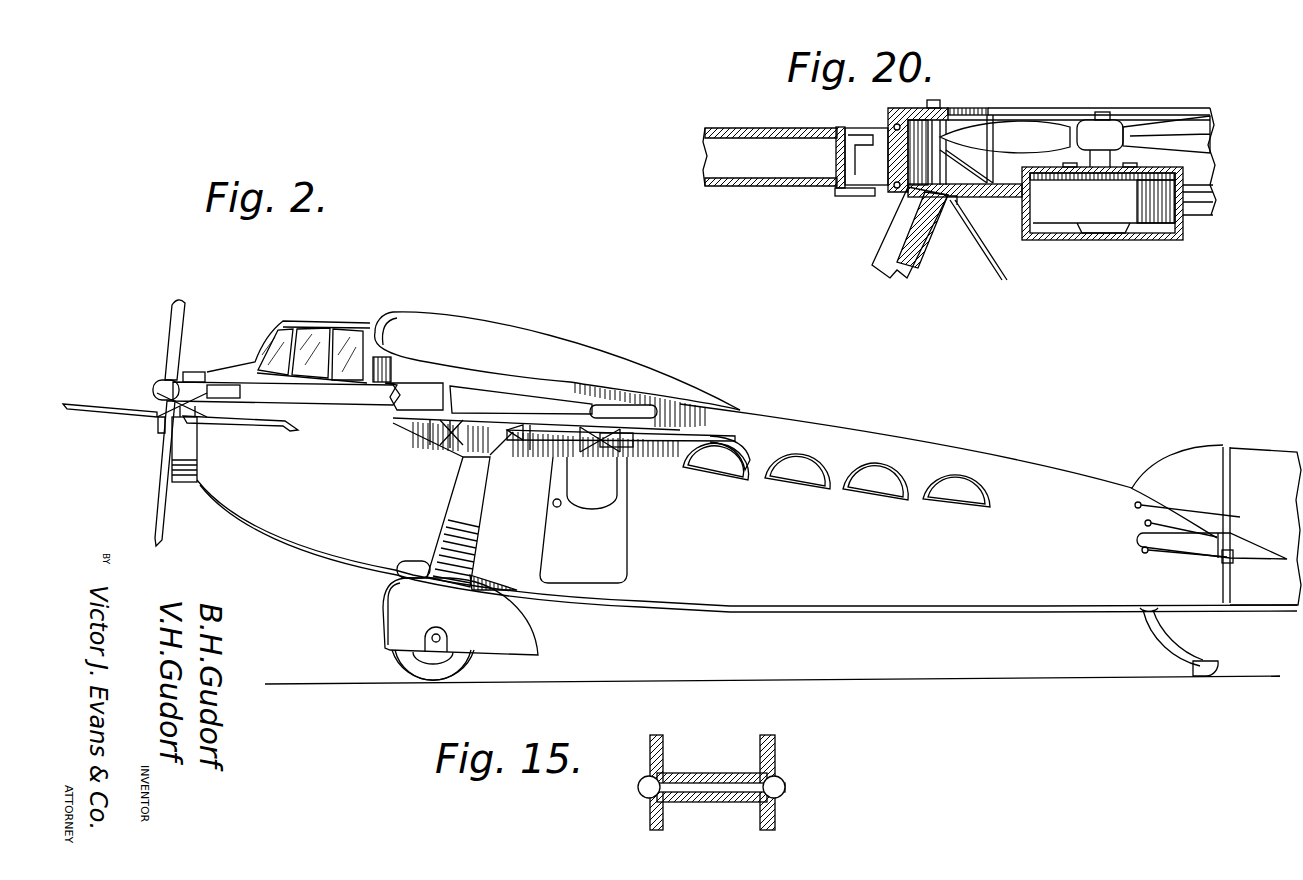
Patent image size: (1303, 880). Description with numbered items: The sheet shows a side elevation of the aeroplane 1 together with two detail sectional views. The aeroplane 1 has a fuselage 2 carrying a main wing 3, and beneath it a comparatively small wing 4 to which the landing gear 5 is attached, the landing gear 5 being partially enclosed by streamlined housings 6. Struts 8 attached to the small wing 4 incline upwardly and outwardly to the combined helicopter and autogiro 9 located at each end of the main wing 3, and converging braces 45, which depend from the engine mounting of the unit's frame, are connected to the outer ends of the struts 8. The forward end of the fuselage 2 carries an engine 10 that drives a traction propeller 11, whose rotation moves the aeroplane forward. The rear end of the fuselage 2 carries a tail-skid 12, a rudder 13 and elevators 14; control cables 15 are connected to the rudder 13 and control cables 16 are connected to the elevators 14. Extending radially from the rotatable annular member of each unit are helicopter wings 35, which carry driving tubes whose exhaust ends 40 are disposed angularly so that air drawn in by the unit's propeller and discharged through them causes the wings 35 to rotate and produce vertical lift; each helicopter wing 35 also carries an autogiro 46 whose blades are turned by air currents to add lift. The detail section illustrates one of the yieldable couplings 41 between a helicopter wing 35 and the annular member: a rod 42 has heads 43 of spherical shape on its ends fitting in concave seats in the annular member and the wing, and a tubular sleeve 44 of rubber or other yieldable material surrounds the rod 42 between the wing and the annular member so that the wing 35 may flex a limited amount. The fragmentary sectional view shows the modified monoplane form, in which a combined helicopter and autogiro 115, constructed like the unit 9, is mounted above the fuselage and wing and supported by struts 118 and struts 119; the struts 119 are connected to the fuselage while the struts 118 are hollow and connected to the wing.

In FIG. 2, the aeroplane 1 is at (912, 437).
In FIG. 2, the fuselage 2 is at (747, 466).
In FIG. 2, the main wing 3 is at (560, 350).
In FIG. 2, the small wing 4 is at (413, 567).
In FIG. 2, the landing gear 5 is at (427, 672).
In FIG. 2, the housings 6 is at (397, 610).
In FIG. 2, the struts 8 is at (457, 510).
In FIG. 2, the combined helicopter and autogiro 9 is at (425, 393).
In FIG. 2, the engine 10 is at (183, 460).
In FIG. 2, the traction propeller 11 is at (177, 313).
In FIG. 2, the tail-skid 12 is at (1177, 660).
In FIG. 2, the rudder 13 is at (1260, 457).
In FIG. 2, the elevators 14 is at (1250, 550).
In FIG. 2, the control cables 15 is at (1193, 507).
In FIG. 2, the control cables 16 is at (1170, 557).
In FIG. 2, the helicopter wings 35 is at (347, 395).
In FIG. 2, the exhaust ends 40 is at (222, 385).
In FIG. 2, the converging braces 45 is at (448, 435).
In FIG. 2, the autogiro 46 is at (260, 425).
In FIG. 15, the coupling 41 is at (700, 773).
In FIG. 15, the rod 42 is at (740, 783).
In FIG. 15, the heads 43 is at (785, 787).
In FIG. 15, the tubular sleeve 44 is at (690, 800).
In FIG. 20, the combined helicopter and autogiro 115 is at (1018, 108).
In FIG. 20, the struts 118 is at (902, 237).
In FIG. 20, the struts 119 is at (978, 257).